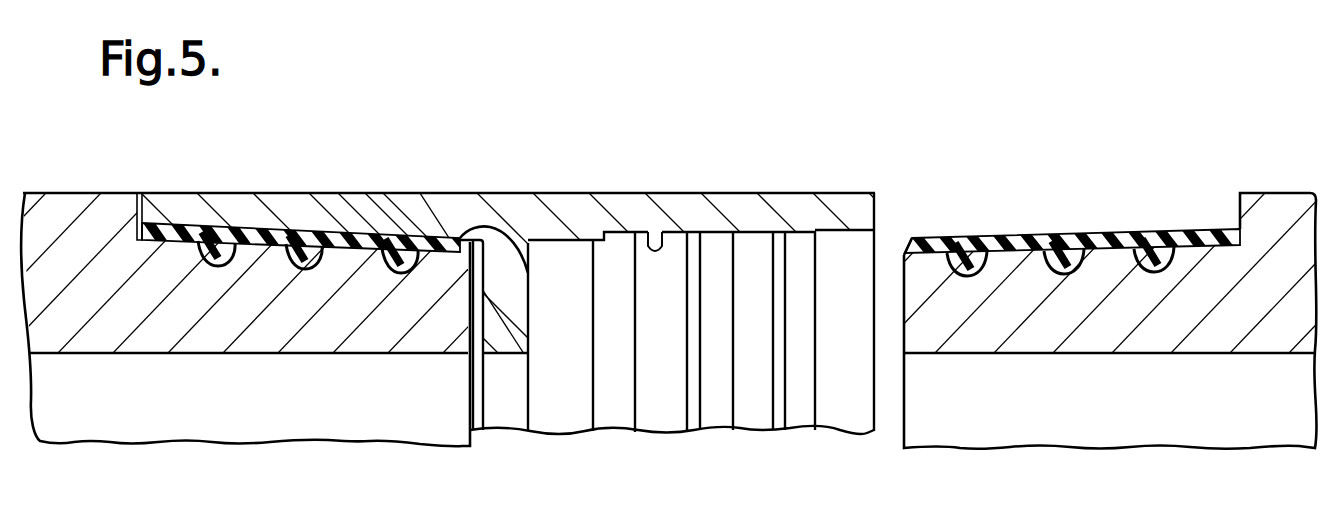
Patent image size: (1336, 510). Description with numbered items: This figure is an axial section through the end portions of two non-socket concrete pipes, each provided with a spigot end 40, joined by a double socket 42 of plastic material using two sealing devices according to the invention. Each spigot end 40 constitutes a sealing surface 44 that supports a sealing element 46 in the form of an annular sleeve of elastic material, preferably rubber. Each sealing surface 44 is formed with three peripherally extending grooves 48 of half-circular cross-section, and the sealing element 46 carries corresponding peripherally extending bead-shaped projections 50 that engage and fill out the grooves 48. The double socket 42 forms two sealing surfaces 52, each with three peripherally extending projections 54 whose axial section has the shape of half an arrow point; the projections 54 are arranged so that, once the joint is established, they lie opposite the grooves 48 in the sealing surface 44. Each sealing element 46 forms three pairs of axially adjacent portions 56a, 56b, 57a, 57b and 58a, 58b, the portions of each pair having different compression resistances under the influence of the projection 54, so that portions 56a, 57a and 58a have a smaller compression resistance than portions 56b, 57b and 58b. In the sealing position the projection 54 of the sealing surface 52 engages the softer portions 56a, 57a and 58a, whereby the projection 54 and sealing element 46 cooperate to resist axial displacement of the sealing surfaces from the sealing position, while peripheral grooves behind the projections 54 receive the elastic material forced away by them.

The spigot end 40 is at (262, 330).
The double socket 42 is at (416, 234).
The sealing surface 44 is at (222, 236).
The sealing element 46 is at (340, 236).
The groove 48 is at (212, 262).
The bead-shaped projection 50 is at (200, 252).
The sealing surface 52 is at (384, 238).
The projection 54 is at (800, 232).
The portion 56a is at (428, 237).
The portion 56b is at (530, 272).
The portion 57a is at (300, 234).
The portion 57b is at (352, 236).
The portion 58a is at (213, 226).
The portion 58b is at (220, 222).